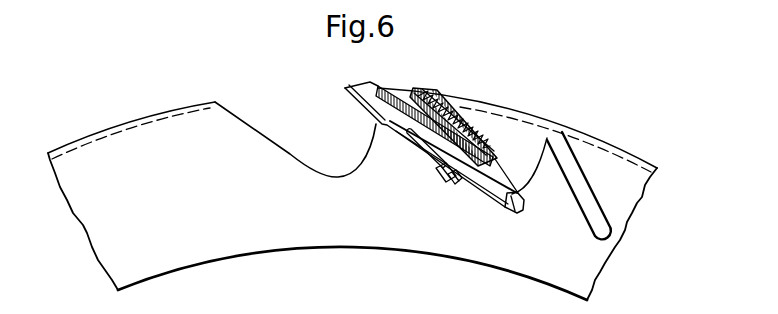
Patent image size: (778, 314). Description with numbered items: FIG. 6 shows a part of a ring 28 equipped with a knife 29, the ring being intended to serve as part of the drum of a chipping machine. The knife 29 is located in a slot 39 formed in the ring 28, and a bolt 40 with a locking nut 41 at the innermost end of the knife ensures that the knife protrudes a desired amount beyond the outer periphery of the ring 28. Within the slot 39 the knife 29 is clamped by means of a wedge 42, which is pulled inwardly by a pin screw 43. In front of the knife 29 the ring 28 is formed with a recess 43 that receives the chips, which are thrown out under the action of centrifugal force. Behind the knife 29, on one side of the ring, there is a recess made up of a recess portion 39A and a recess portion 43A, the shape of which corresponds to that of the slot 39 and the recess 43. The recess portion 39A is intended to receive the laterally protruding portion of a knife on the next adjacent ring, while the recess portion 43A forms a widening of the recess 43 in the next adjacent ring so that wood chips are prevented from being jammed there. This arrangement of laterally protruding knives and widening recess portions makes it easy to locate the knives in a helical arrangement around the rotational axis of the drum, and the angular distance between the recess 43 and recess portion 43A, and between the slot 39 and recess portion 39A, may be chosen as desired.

The ring 28 is at (165, 123).
The knife 29 is at (362, 93).
The slot 39 is at (413, 156).
The recess portion 39A is at (547, 133).
The bolt 40 is at (453, 178).
The locking nut 41 is at (440, 172).
The wedge 42 is at (426, 90).
The recess 43 is at (410, 87).
The recess portion 43A is at (515, 128).